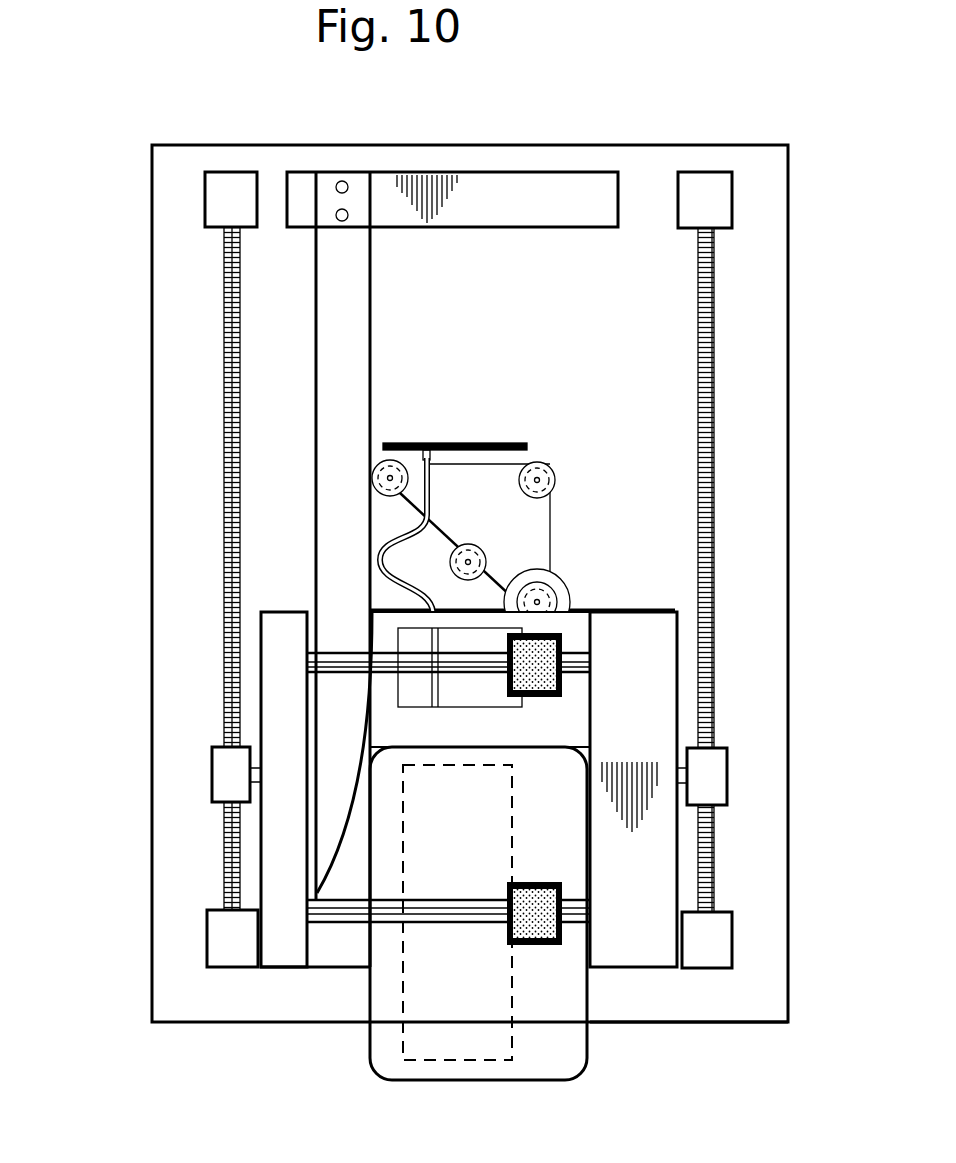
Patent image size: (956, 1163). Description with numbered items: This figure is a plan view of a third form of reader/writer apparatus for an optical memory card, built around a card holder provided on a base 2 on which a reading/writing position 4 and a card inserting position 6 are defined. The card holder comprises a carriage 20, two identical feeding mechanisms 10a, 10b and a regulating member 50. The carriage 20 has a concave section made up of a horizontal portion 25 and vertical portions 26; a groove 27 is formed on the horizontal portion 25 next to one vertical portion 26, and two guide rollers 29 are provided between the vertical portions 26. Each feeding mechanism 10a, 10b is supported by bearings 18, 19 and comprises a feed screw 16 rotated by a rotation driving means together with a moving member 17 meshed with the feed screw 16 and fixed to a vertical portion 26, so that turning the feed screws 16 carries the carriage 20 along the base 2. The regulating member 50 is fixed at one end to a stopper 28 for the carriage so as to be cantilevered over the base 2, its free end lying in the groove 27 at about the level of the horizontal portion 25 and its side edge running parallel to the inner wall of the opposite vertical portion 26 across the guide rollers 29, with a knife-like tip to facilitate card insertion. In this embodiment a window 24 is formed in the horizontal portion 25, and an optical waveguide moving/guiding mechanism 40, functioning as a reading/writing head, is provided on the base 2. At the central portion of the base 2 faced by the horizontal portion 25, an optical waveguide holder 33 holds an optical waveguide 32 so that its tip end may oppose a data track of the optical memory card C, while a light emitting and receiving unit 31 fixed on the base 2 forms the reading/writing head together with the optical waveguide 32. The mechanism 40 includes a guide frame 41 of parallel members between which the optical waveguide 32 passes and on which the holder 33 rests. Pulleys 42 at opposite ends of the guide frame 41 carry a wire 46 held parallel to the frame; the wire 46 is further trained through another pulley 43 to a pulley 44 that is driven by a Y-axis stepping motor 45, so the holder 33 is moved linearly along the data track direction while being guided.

The base 2 is at (788, 412).
The reading/writing position 4 is at (560, 337).
The card inserting position 6 is at (652, 603).
The feeding mechanism 10a is at (220, 377).
The feeding mechanism 10b is at (714, 378).
The feed screw 16 is at (224, 470).
The moving member 17 is at (222, 780).
The bearing 18 is at (215, 946).
The bearing 19 is at (207, 207).
The carriage 20 is at (647, 970).
The window 24 is at (412, 641).
The horizontal portion 25 is at (553, 718).
The vertical portion 26 is at (290, 960).
The groove 27 is at (348, 932).
The stopper 28 is at (538, 192).
The guide roller 29 is at (562, 645).
The light emitting and receiving unit 31 is at (462, 724).
The optical waveguide 32 is at (435, 490).
The optical waveguide holder 33 is at (401, 405).
The optical waveguide moving/guiding mechanism 40 is at (464, 440).
The guide frame 41 is at (503, 440).
The pulley 42 is at (372, 478).
The pulley 43 is at (450, 563).
The pulley 44 is at (532, 580).
The Y-axis stepping motor 45 is at (560, 595).
The wire 46 is at (553, 510).
The regulating member 50 is at (355, 262).
The optical memory card C is at (545, 1055).